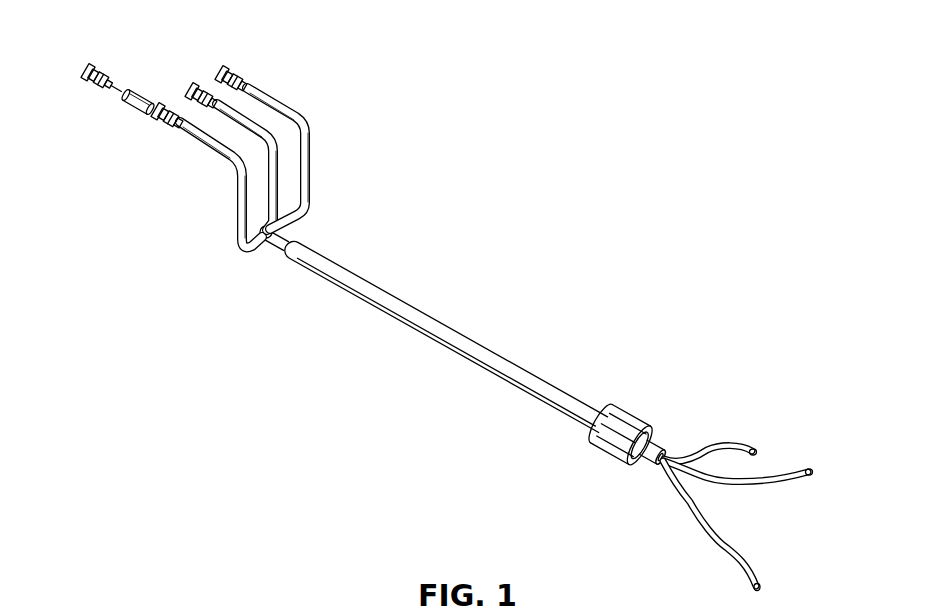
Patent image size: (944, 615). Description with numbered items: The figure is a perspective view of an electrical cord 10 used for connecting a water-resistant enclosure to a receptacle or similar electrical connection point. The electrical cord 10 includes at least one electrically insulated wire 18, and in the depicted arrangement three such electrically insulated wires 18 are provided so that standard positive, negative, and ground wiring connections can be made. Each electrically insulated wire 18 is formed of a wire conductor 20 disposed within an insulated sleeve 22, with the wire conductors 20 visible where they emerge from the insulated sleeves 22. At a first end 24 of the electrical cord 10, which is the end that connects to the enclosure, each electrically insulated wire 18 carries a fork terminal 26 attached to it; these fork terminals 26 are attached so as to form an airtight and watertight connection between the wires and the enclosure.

The electrical cord 10 is at (570, 88).
The electrically insulated wire 18 is at (232, 152).
The wire conductor 20 is at (757, 450).
The insulated sleeve 22 is at (717, 446).
The first end 24 is at (193, 204).
The fork terminal 26 is at (88, 67).